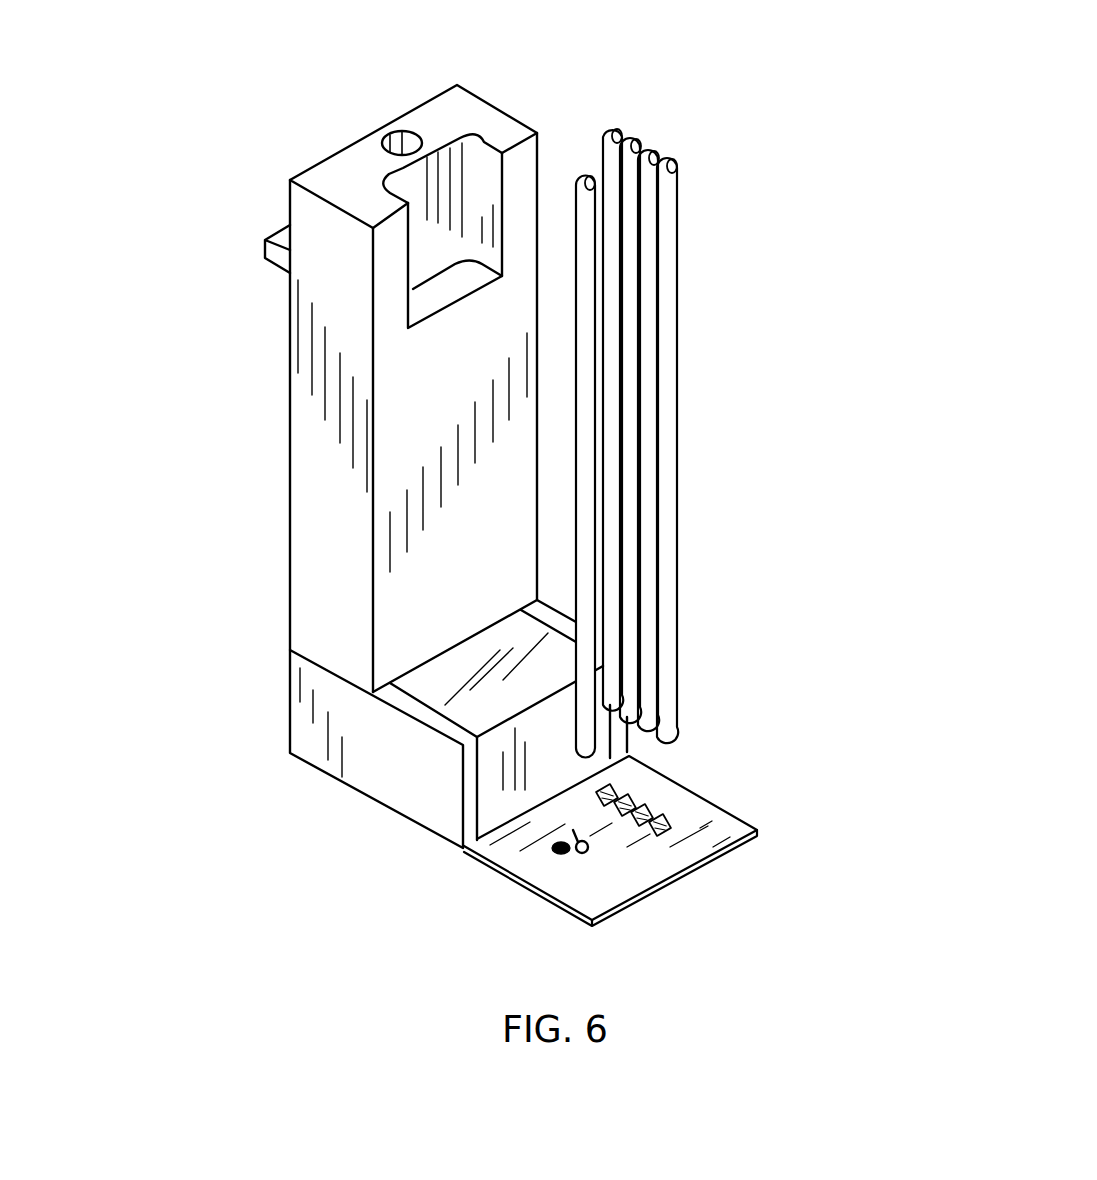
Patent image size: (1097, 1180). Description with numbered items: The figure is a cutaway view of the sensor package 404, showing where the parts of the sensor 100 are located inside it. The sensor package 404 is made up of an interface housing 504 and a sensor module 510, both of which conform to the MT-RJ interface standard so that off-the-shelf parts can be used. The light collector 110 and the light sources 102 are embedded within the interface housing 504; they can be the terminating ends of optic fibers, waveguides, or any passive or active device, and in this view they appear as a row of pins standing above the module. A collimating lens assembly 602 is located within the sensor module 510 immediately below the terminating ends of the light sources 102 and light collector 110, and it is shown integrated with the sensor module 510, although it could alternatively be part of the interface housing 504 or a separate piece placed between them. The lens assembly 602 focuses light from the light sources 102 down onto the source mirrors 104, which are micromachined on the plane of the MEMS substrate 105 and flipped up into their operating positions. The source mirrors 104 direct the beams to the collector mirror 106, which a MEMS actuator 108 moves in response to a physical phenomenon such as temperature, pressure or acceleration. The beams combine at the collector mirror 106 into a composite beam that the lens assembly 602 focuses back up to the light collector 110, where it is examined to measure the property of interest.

The sensor 100 is at (515, 477).
The light sources 102 is at (640, 143).
The source mirrors 104 is at (662, 833).
The MEMS substrate 105 is at (725, 828).
The collector mirror 106 is at (584, 843).
The MEMS actuator 108 is at (560, 852).
The light collector 110 is at (585, 212).
The sensor package 404 is at (352, 432).
The interface housing 504 is at (320, 467).
The sensor module 510 is at (361, 724).
The collimating lens assembly 602 is at (458, 713).